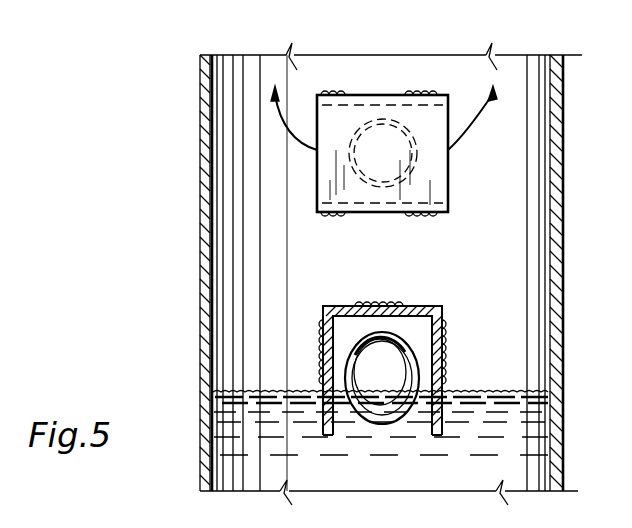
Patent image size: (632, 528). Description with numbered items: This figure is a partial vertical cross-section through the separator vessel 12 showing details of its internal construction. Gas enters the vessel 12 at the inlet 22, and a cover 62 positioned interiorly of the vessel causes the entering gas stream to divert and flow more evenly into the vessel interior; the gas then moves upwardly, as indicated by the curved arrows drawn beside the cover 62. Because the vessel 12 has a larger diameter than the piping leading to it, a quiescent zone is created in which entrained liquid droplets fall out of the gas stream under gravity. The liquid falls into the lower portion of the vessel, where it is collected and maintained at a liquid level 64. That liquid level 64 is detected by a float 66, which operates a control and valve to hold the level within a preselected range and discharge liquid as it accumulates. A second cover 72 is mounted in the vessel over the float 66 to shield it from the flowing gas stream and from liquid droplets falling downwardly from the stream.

The separator vessel 12 is at (553, 196).
The inlet 22 is at (412, 162).
The cover 62 is at (435, 185).
The cover 72 is at (440, 306).
The float 66 is at (395, 372).
The liquid level 64 is at (506, 392).